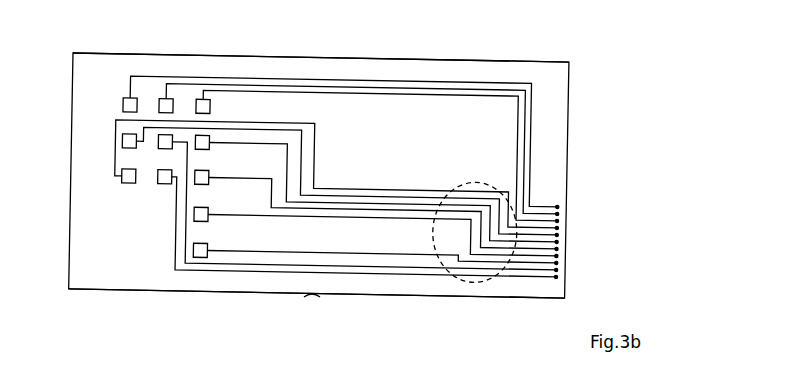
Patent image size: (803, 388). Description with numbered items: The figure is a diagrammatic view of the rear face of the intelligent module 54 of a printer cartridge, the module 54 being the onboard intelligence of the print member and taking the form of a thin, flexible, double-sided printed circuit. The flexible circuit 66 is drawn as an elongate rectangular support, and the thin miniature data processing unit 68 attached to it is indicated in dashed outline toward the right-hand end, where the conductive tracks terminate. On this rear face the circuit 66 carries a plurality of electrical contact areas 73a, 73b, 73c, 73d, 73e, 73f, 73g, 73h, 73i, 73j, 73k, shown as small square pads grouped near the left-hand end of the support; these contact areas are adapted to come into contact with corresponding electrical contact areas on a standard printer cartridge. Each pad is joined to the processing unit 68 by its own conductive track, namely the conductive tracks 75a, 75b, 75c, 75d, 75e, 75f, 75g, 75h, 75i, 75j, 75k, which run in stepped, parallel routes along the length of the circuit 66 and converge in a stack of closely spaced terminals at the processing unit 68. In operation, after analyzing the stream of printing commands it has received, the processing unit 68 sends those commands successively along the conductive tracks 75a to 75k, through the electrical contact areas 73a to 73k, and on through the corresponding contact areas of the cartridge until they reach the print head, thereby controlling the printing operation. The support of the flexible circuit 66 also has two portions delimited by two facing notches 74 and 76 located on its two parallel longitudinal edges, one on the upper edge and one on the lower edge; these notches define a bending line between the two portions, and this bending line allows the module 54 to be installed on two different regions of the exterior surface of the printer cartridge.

The intelligent module 54 is at (578, 109).
The flexible circuit 66 is at (118, 292).
The data processing unit 68 is at (479, 182).
The notch 74 is at (316, 92).
The notch 76 is at (313, 298).
The electrical contact area 73a is at (200, 97).
The electrical contact area 73b is at (209, 134).
The electrical contact area 73c is at (199, 187).
The electrical contact area 73d is at (205, 224).
The electrical contact area 73e is at (198, 260).
The electrical contact area 73f is at (164, 97).
The electrical contact area 73g is at (160, 151).
The electrical contact area 73h is at (162, 186).
The electrical contact area 73i is at (122, 102).
The electrical contact area 73j is at (122, 142).
The electrical contact area 73k is at (126, 184).
The conductive track 75a is at (330, 90).
The conductive track 75b is at (424, 196).
The conductive track 75c is at (404, 215).
The conductive track 75d is at (400, 221).
The conductive track 75e is at (432, 256).
The conductive track 75f is at (304, 84).
The conductive track 75g is at (343, 274).
The conductive track 75h is at (368, 279).
The conductive track 75i is at (264, 77).
The conductive track 75j is at (332, 189).
The conductive track 75k is at (382, 188).